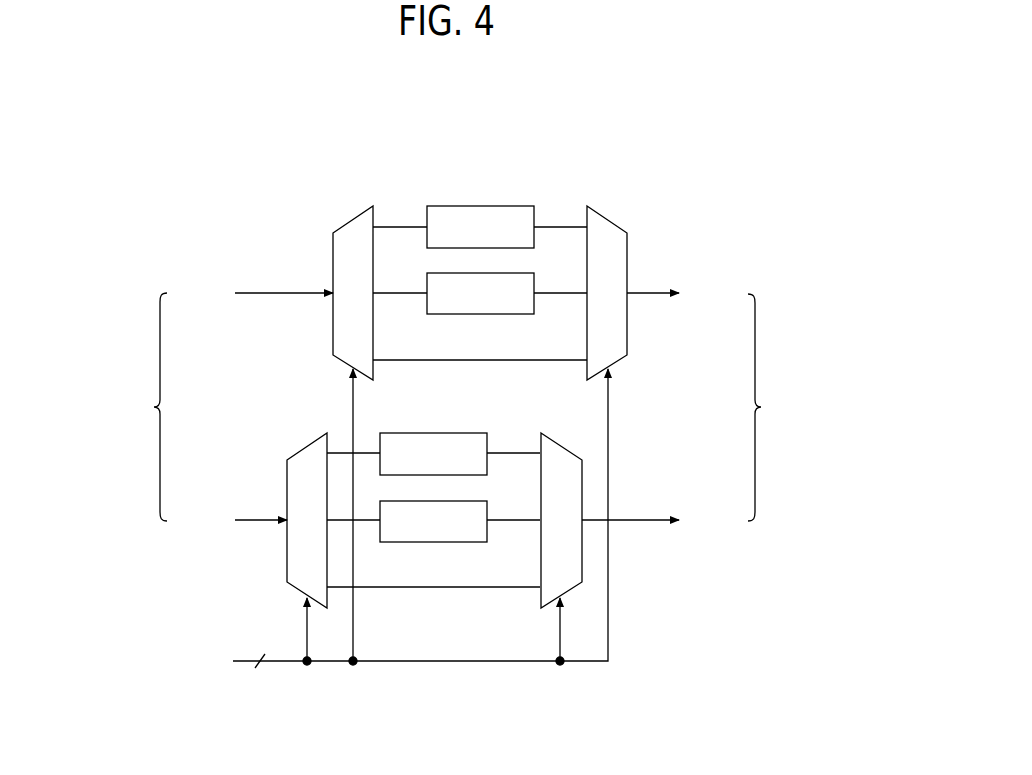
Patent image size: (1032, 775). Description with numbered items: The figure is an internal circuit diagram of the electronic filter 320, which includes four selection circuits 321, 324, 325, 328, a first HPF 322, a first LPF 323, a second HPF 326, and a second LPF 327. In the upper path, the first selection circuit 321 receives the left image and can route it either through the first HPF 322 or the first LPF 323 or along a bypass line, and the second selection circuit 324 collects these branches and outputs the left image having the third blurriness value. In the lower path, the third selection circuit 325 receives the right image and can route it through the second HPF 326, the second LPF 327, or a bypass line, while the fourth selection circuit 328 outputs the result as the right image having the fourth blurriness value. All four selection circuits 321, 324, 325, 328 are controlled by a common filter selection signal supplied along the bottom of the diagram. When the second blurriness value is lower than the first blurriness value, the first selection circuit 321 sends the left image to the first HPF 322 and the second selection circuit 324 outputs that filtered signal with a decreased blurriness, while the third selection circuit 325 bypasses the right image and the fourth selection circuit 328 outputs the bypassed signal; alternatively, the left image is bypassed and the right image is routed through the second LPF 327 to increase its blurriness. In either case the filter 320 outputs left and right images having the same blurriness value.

The electronic filter 320 is at (668, 152).
The first selection circuit 321 is at (356, 217).
The first HPF 322 is at (480, 206).
The first LPF 323 is at (478, 314).
The second selection circuit 324 is at (600, 215).
The third selection circuit 325 is at (305, 447).
The second HPF 326 is at (436, 433).
The second LPF 327 is at (432, 542).
The fourth selection circuit 328 is at (563, 447).